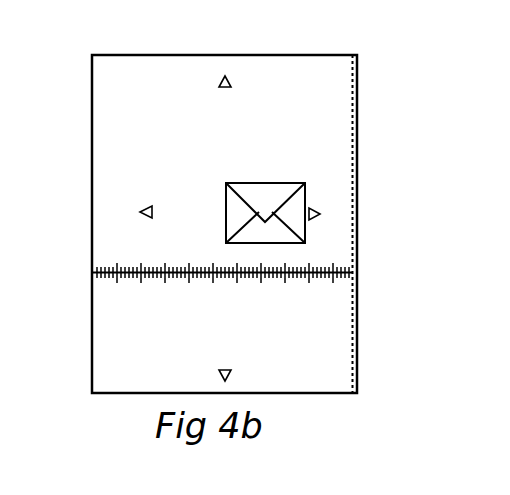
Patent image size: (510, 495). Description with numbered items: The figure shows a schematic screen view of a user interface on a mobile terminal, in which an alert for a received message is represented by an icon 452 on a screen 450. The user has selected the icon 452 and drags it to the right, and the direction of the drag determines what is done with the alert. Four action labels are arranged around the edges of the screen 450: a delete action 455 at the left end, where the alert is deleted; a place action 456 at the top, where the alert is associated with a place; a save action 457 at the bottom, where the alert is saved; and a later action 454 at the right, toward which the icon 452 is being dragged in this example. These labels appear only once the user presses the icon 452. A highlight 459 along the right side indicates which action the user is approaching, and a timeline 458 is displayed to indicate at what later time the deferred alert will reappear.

The screen 450 is at (92, 71).
The icon 452 is at (260, 193).
The later action 454 is at (352, 197).
The delete action 455 is at (105, 205).
The place action 456 is at (218, 68).
The save action 457 is at (200, 387).
The timeline 458 is at (100, 270).
The highlight 459 is at (352, 325).